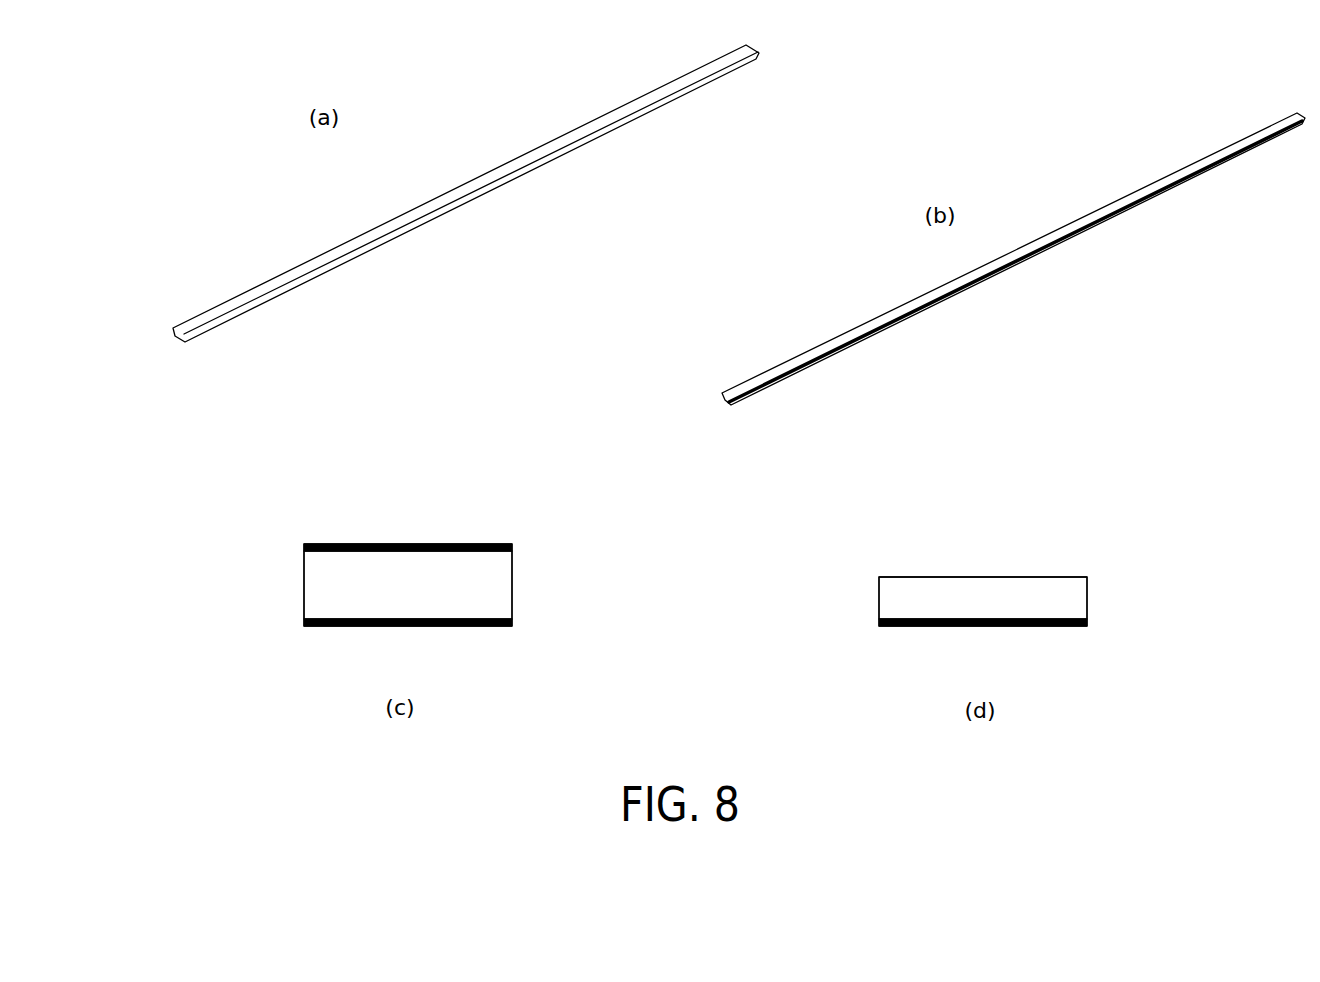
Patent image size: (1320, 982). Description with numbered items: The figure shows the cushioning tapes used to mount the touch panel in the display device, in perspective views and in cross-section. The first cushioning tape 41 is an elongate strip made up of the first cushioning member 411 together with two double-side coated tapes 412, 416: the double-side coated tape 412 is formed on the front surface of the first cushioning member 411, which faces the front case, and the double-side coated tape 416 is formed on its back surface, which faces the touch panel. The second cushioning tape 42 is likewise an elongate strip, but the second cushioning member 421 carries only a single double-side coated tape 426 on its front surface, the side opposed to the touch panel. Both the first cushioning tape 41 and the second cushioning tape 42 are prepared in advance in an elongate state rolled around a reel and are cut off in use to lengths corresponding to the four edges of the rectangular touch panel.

The first cushioning tape 41 is at (476, 142).
The first cushioning member 411 is at (322, 588).
The double-side coated tape 412 is at (317, 627).
The double-side coated tape 416 is at (318, 547).
The second cushioning tape 42 is at (1073, 182).
The second cushioning member 421 is at (892, 597).
The double-side coated tape 426 is at (892, 627).